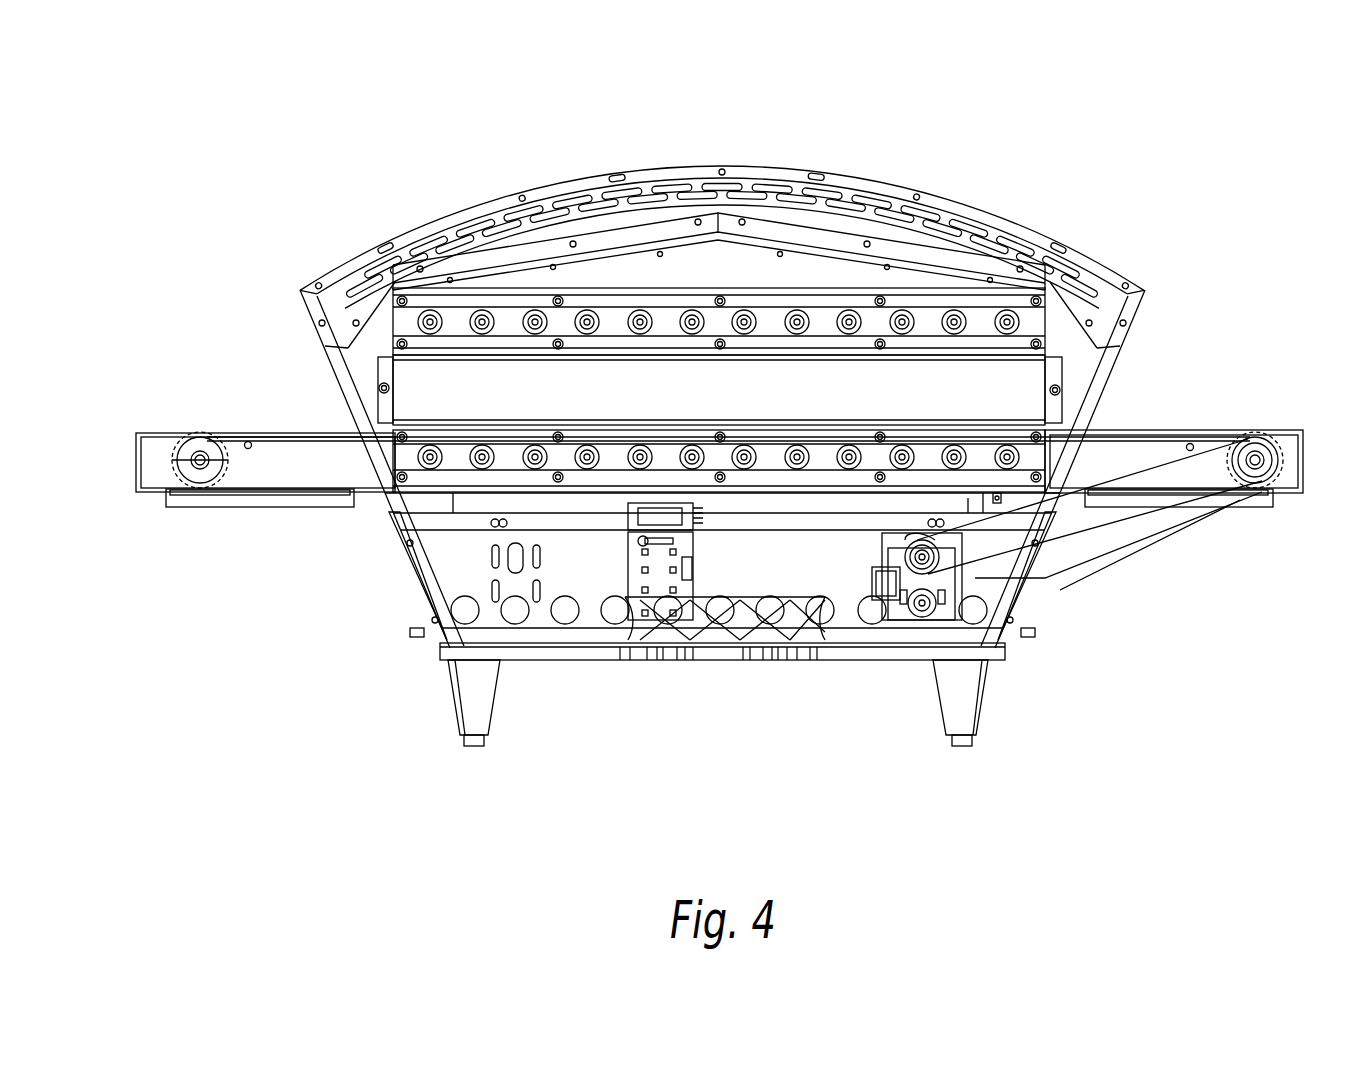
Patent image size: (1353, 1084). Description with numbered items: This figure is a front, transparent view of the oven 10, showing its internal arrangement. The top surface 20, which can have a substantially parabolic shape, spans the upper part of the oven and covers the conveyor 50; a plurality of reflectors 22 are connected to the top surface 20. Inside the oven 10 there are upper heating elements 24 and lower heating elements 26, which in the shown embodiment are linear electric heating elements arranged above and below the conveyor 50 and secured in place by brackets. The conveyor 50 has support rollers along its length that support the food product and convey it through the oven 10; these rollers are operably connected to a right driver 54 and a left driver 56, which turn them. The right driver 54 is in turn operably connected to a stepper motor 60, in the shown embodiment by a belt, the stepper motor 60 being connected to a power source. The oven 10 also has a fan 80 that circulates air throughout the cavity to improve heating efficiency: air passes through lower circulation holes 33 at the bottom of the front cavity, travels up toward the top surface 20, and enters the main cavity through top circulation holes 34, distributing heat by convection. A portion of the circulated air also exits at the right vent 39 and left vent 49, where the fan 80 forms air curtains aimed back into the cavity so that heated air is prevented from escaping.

The oven 10 is at (207, 148).
The top surface 20 is at (797, 168).
The reflectors 22 is at (627, 235).
The upper heating elements 24 is at (1005, 315).
The lower heating elements 26 is at (1089, 526).
The lower circulation holes 33 is at (522, 615).
The top circulation holes 34 is at (385, 253).
The right vent 39 is at (1117, 333).
The left vent 49 is at (330, 345).
The conveyor 50 is at (293, 508).
The right driver 54 is at (1245, 450).
The left driver 56 is at (185, 448).
The stepper motor 60 is at (952, 583).
The fan 80 is at (750, 650).